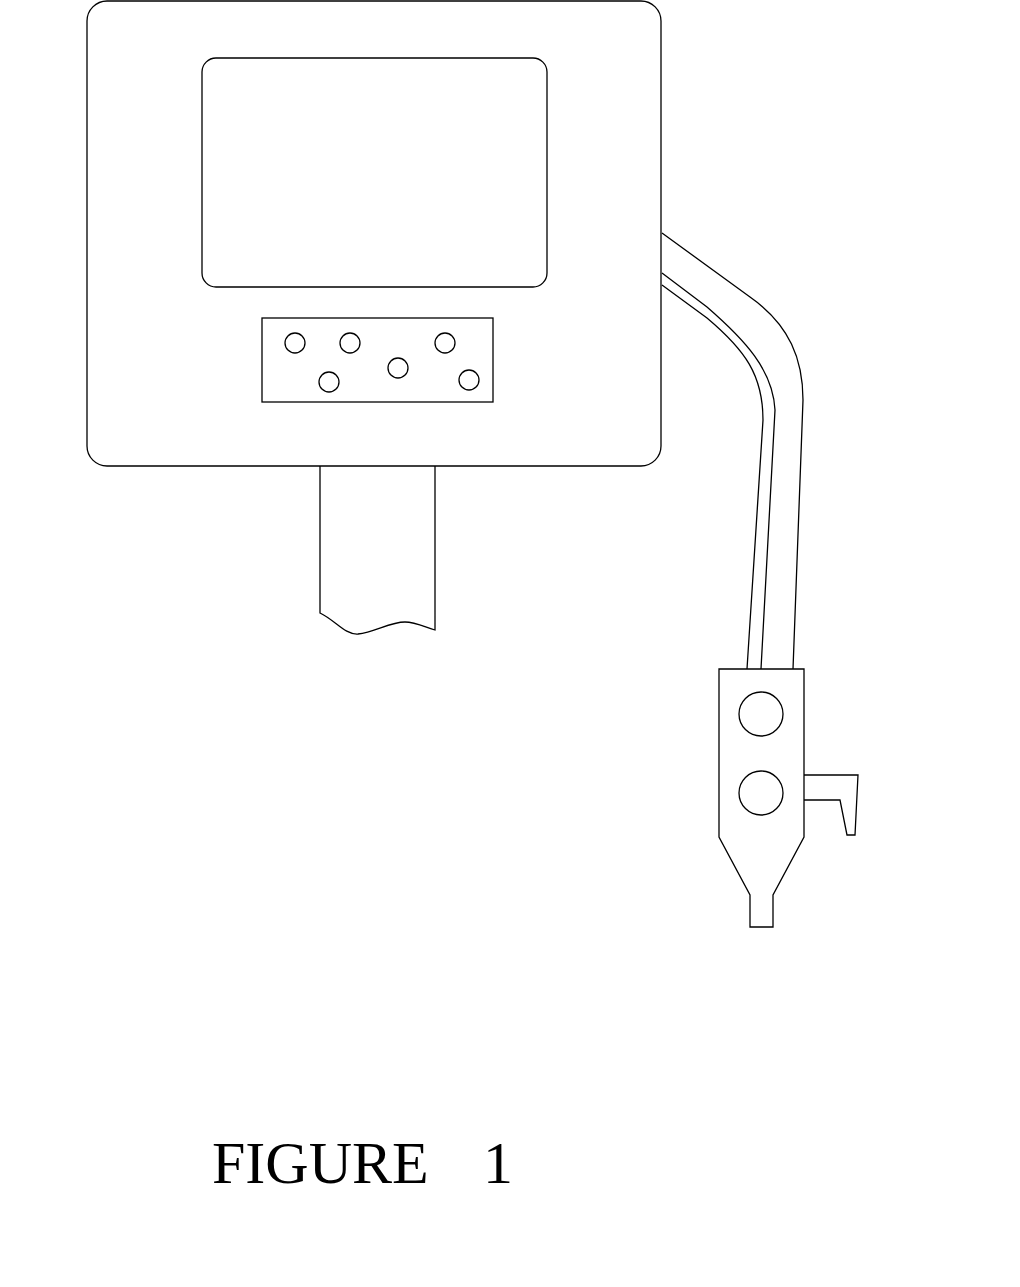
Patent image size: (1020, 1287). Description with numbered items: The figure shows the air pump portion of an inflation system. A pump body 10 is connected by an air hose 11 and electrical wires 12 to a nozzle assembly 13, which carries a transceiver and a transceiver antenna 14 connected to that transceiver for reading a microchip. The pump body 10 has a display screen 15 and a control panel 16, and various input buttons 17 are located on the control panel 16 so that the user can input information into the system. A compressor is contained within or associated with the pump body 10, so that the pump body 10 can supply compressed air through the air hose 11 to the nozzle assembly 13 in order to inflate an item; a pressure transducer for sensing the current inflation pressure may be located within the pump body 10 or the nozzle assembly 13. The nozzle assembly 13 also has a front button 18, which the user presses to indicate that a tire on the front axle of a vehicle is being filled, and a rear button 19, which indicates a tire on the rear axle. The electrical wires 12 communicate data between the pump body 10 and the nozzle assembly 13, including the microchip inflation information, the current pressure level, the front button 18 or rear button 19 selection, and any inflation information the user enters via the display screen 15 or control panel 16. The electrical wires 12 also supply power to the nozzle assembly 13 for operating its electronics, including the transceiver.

The pump body 10 is at (167, 480).
The air hose 11 is at (777, 299).
The electrical wires 12 is at (758, 455).
The nozzle assembly 13 is at (722, 856).
The transceiver antenna 14 is at (838, 770).
The display screen 15 is at (475, 155).
The control panel 16 is at (300, 406).
The input buttons 17 is at (470, 384).
The front button 18 is at (747, 713).
The rear button 19 is at (748, 791).